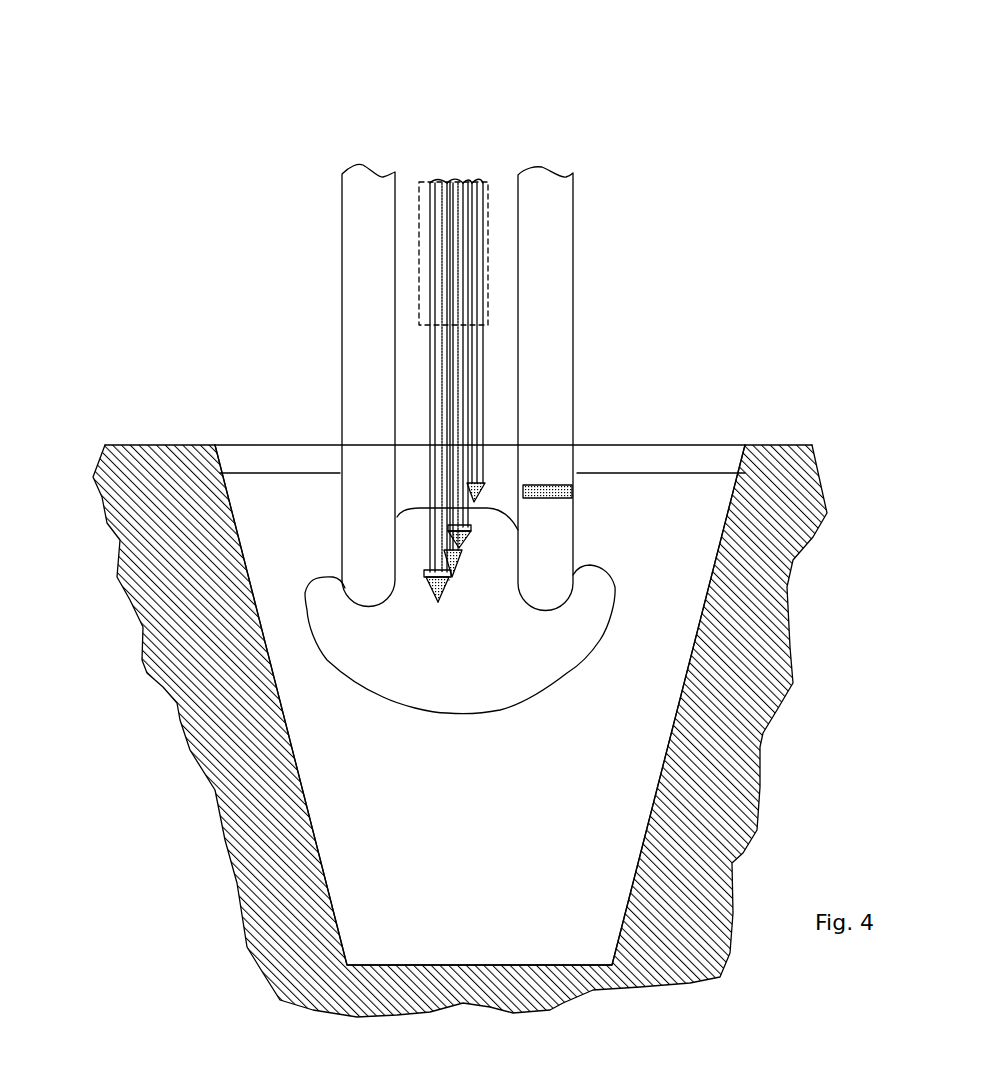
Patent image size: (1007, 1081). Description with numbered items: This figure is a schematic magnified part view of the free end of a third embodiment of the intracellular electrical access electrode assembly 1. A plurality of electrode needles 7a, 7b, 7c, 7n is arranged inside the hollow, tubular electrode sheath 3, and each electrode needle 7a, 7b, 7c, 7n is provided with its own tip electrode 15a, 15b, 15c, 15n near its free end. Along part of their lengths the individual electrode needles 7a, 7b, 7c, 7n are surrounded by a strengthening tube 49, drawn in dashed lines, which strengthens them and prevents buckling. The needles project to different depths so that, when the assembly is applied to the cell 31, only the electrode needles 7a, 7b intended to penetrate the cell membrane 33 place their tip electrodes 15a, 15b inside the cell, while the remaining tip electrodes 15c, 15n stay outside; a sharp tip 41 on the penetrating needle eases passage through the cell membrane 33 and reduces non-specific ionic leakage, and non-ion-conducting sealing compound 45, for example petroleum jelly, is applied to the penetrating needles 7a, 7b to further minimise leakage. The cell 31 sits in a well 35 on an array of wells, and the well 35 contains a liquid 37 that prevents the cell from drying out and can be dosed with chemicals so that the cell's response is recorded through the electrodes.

The intracellular electrical access electrode assembly 1 is at (687, 325).
The electrode sheath 3 is at (660, 389).
The electrode needle 7a is at (534, 340).
The electrode needle 7b is at (564, 350).
The electrode needle 7c is at (581, 353).
The electrode needle 7n is at (610, 331).
The tip electrode 15a is at (296, 456).
The tip electrode 15b is at (258, 418).
The tip electrode 15c is at (292, 375).
The tip electrode 15n is at (290, 325).
The cell 31 is at (559, 563).
The cell membrane 33 is at (234, 385).
The well 35 is at (437, 707).
The liquid 37 is at (549, 705).
The sharp tip 41 is at (248, 640).
The non-ion-conducting sealing compound 45 is at (668, 666).
The strengthening tube 49 is at (373, 180).